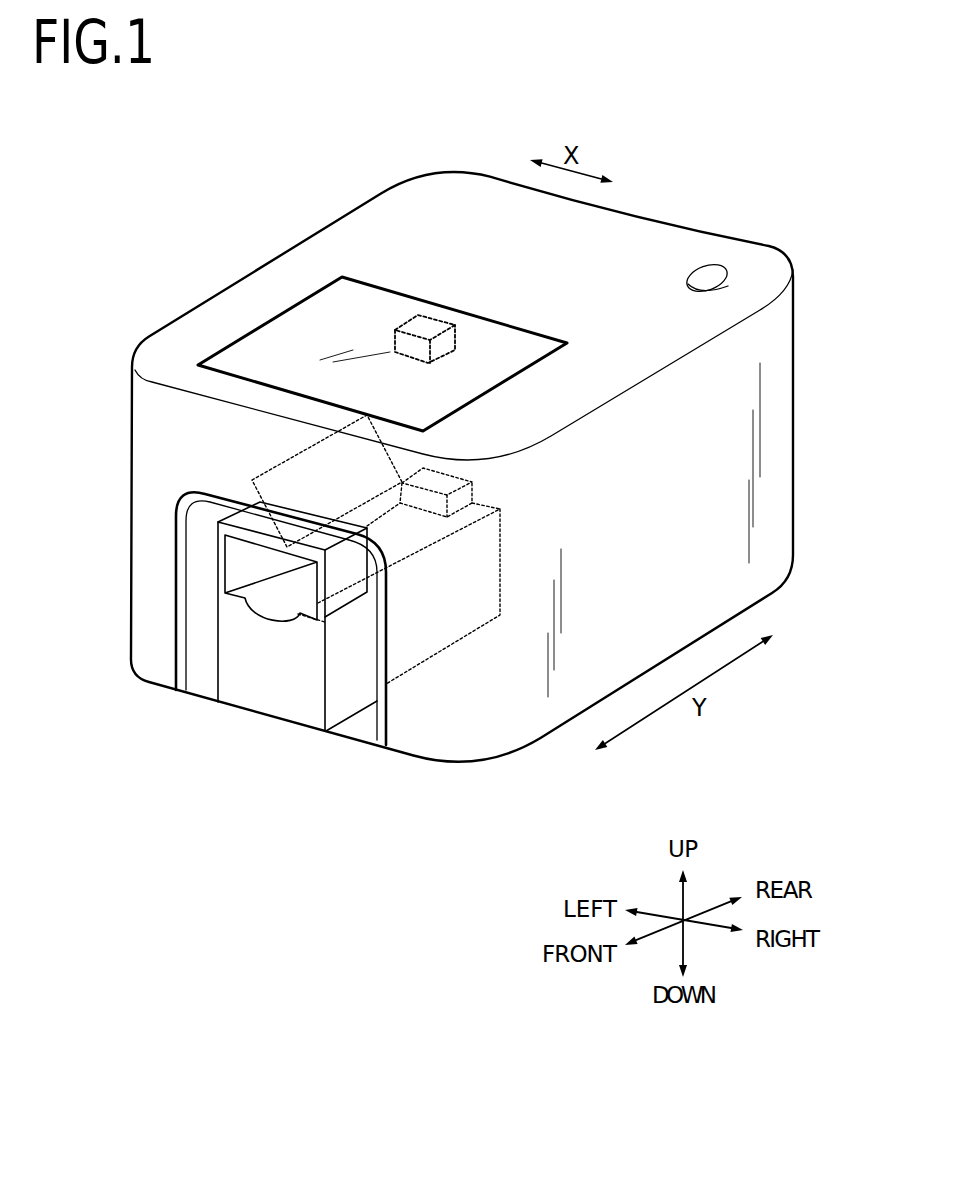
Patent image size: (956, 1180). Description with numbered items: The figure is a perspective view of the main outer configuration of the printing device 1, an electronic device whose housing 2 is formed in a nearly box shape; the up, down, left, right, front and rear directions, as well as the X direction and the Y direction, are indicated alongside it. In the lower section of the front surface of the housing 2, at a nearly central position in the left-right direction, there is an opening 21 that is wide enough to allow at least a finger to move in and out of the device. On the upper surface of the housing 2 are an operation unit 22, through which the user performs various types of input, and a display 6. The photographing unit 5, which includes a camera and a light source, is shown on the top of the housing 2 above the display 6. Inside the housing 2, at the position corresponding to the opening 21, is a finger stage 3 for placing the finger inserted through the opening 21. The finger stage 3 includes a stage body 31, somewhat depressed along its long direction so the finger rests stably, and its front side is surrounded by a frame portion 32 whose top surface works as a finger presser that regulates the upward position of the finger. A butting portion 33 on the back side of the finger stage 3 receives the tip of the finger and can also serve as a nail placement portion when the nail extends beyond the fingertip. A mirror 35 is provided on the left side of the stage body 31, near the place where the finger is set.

The printing device 1 is at (499, 450).
The housing 2 is at (640, 222).
The finger stage 3 is at (298, 633).
The photographing unit 5 is at (440, 322).
The display 6 is at (263, 367).
The opening 21 is at (184, 550).
The operation unit 22 is at (713, 283).
The stage body 31 is at (438, 650).
The frame portion 32 is at (231, 506).
The butting portion 33 is at (450, 480).
The mirror 35 is at (293, 480).